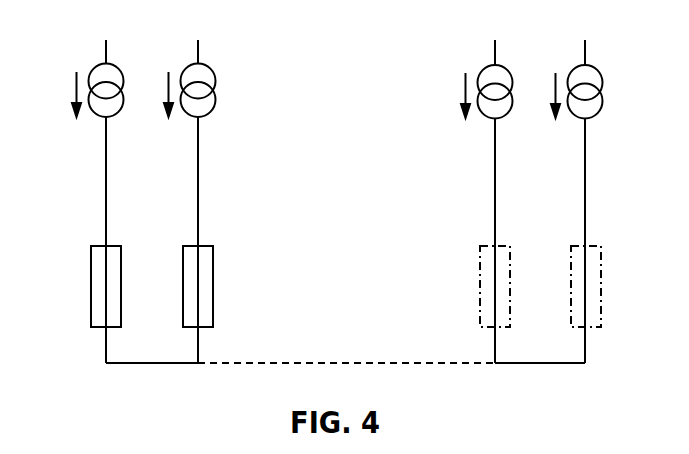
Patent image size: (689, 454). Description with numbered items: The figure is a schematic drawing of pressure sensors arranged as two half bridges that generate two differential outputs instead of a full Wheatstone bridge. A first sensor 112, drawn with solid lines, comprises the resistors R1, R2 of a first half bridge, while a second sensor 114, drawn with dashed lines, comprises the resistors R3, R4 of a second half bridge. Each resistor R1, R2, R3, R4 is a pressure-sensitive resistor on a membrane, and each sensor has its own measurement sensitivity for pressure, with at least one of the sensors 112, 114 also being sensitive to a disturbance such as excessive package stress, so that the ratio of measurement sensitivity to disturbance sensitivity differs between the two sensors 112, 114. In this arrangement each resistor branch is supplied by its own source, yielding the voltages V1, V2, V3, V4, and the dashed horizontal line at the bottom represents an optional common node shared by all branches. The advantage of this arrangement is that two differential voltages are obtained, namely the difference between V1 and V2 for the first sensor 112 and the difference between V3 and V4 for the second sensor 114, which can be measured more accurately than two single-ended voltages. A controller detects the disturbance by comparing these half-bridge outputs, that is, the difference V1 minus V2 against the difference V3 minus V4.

The first sensor 112 is at (218, 297).
The second sensor 114 is at (438, 292).
The voltage V1 is at (85, 143).
The voltage V2 is at (184, 143).
The voltage V3 is at (481, 143).
The voltage V4 is at (574, 143).
The resistor R1 is at (83, 304).
The resistor R2 is at (216, 343).
The resistor R3 is at (471, 304).
The resistor R4 is at (565, 304).